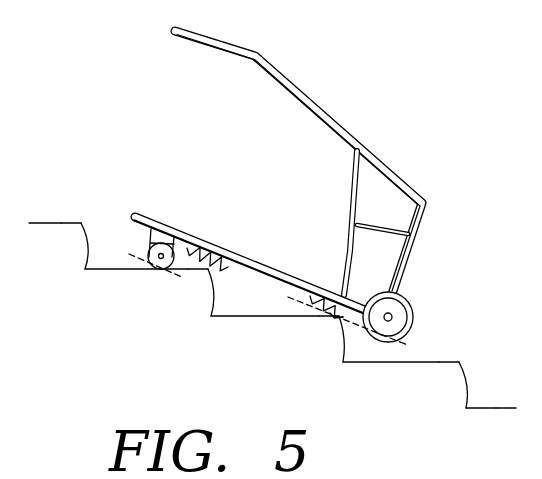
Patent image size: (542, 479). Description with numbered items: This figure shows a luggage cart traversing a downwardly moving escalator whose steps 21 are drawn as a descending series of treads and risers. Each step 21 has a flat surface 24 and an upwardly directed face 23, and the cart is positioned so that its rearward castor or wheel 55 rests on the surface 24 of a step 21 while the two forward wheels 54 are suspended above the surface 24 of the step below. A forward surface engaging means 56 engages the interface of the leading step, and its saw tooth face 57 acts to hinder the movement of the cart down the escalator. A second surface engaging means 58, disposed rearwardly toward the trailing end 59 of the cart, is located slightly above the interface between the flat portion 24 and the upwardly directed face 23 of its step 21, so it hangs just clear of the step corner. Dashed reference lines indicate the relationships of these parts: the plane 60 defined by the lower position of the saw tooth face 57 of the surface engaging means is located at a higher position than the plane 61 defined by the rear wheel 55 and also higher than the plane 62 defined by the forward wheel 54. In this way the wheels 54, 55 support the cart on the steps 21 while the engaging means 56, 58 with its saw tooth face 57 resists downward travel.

The step 21 is at (31, 262).
The upwardly directed face 23 is at (80, 260).
The surface 24 is at (64, 221).
The forward wheel 54 is at (409, 309).
The rearward castor 55 is at (143, 253).
The forward surface engaging means 56 is at (316, 295).
The saw tooth face 57 is at (336, 321).
The surface engaging means 58 is at (188, 246).
The trailing end 59 is at (127, 212).
The plane 60 is at (235, 276).
The plane 61 is at (177, 269).
The plane 62 is at (407, 347).